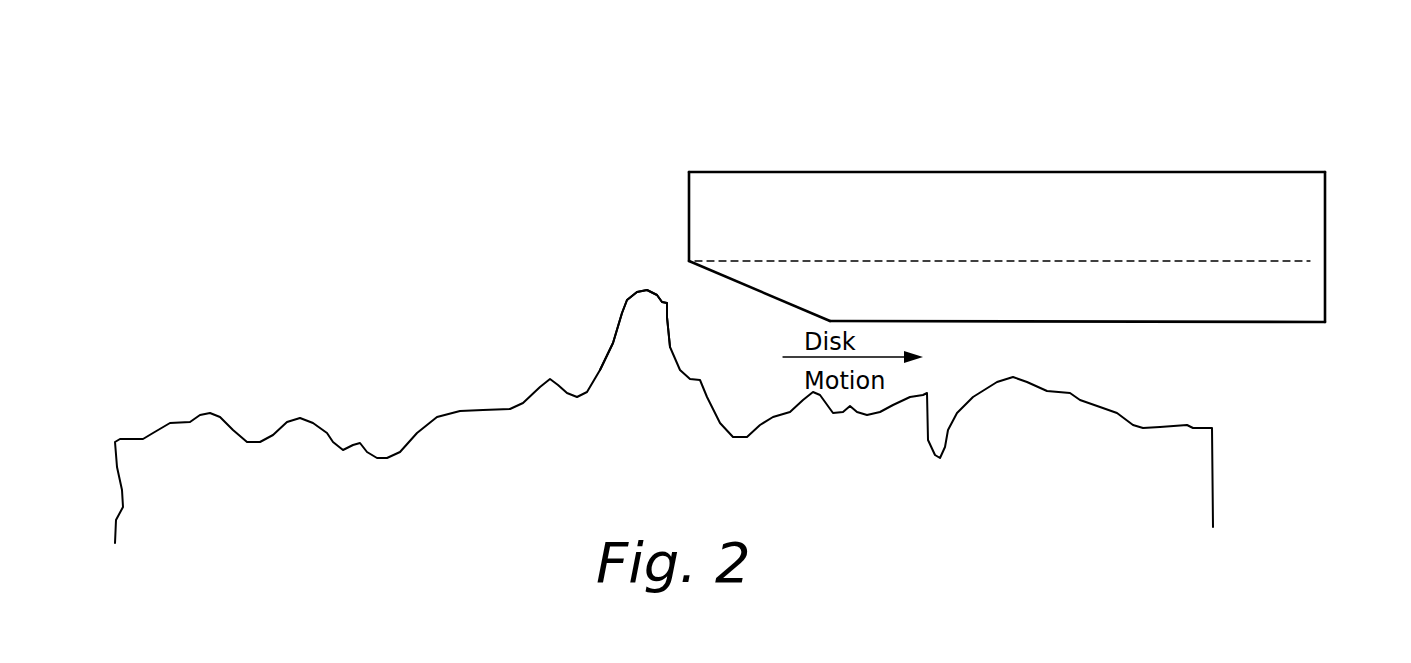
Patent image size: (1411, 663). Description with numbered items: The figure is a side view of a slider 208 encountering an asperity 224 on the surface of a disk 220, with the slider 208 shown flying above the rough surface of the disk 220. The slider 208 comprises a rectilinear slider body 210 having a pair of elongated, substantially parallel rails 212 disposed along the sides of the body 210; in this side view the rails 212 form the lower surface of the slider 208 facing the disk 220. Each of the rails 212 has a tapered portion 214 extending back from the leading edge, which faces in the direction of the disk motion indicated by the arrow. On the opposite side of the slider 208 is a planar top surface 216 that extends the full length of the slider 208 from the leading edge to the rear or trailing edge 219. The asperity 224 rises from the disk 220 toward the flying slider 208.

The slider 208 is at (736, 103).
The slider body 210 is at (688, 206).
The rails 212 is at (1090, 323).
The tapered portion 214 is at (753, 292).
The top surface 216 is at (1100, 171).
The trailing edge 219 is at (1327, 240).
The disk 220 is at (1143, 427).
The asperity 224 is at (627, 299).